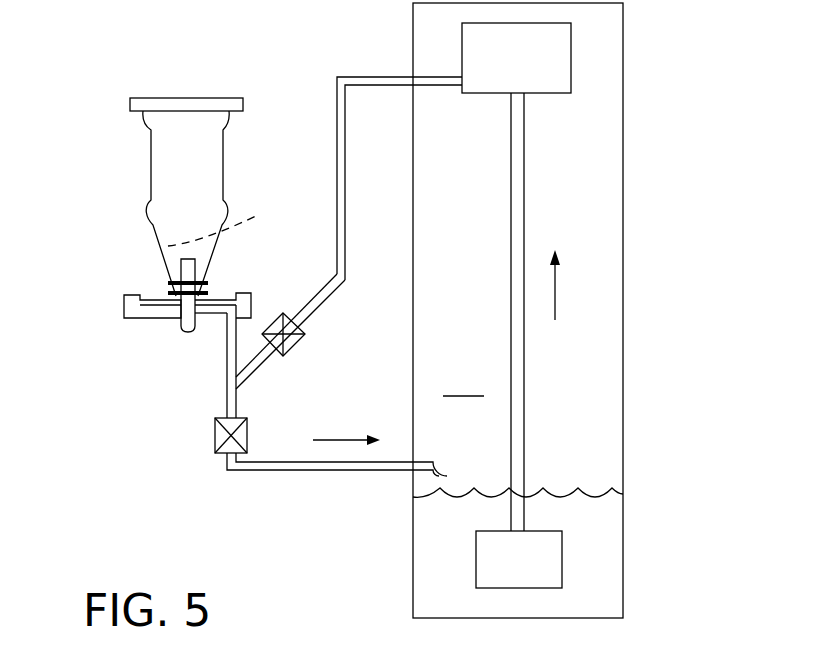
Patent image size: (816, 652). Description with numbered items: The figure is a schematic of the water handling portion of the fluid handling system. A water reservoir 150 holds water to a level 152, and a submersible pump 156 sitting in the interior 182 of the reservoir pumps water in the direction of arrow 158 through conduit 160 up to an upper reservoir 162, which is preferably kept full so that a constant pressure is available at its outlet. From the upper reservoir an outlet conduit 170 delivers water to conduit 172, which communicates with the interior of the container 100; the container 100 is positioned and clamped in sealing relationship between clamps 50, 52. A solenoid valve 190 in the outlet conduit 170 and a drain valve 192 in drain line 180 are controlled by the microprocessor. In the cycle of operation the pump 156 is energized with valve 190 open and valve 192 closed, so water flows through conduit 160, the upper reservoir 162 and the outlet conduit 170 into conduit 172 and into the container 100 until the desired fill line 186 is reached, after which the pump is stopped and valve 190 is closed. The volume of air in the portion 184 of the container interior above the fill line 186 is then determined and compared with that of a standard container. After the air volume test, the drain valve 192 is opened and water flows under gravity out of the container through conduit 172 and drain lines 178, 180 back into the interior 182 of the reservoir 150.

The clamp 50 is at (152, 300).
The clamp 52 is at (207, 98).
The container 100 is at (146, 231).
The water reservoir 150 is at (634, 109).
The level 152 is at (553, 490).
The submersible pump 156 is at (562, 565).
The arrow 158 is at (555, 295).
The conduit 160 is at (524, 189).
The upper reservoir 162 is at (571, 58).
The outlet conduit 170 is at (337, 190).
The conduit 172 is at (240, 337).
The drain line 178 is at (236, 400).
The drain line 180 is at (348, 472).
The interior of the reservoir 182 is at (465, 382).
The portion of the container interior 184 is at (178, 180).
The fill line 186 is at (240, 223).
The solenoid valve 190 is at (297, 350).
The drain valve 192 is at (215, 437).